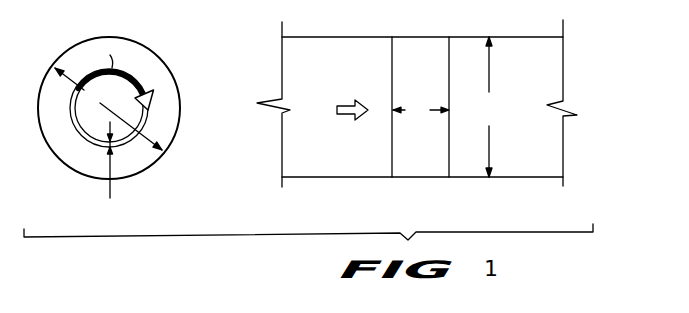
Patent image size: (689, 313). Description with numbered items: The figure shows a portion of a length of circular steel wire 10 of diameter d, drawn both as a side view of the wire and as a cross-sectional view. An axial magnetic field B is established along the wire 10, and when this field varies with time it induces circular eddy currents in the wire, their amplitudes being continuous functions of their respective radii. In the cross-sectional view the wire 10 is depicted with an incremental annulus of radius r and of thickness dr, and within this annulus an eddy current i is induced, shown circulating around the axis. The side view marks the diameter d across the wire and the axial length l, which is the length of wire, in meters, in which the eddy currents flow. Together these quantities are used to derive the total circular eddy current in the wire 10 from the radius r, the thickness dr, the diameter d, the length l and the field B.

The circular steel wire 10 is at (153, 62).
The radius r is at (131, 84).
The diameter d is at (274, 107).
The thickness dr is at (107, 173).
The eddy current i is at (109, 53).
The axial magnetic field B is at (339, 111).
The axial length l is at (421, 111).